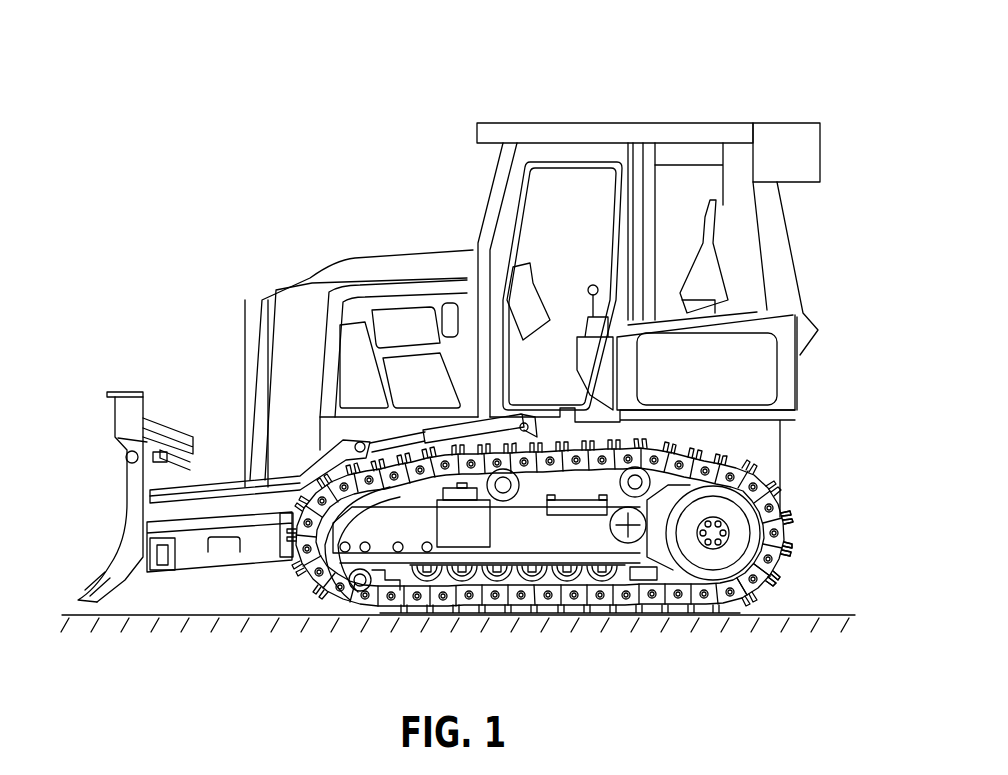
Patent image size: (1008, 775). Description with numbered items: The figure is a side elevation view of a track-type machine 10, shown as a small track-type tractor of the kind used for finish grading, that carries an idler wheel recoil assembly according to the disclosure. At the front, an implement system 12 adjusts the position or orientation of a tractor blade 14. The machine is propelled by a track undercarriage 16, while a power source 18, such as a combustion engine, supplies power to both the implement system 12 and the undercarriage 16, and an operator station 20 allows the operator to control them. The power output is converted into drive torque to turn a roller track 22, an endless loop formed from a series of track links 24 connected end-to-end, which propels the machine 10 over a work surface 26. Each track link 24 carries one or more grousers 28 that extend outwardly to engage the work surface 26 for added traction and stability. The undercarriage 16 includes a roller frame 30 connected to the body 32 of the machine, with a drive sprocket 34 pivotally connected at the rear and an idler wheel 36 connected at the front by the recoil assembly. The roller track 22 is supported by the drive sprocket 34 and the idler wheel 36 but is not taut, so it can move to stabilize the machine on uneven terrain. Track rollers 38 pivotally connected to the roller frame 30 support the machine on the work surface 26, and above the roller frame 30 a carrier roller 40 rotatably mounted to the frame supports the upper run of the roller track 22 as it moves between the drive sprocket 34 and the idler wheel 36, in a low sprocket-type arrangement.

The track-type machine 10 is at (474, 384).
The implement system 12 is at (197, 543).
The tractor blade 14 is at (133, 475).
The track undercarriage 16 is at (551, 563).
The power source 18 is at (400, 325).
The operator station 20 is at (685, 178).
The roller track 22 is at (773, 580).
The track link 24 is at (787, 510).
The work surface 26 is at (200, 620).
The grouser 28 is at (798, 565).
The roller frame 30 is at (362, 615).
The body 32 is at (790, 393).
The drive sprocket 34 is at (722, 575).
The idler wheel 36 is at (340, 568).
The track roller 38 is at (472, 618).
The carrier roller 40 is at (510, 492).